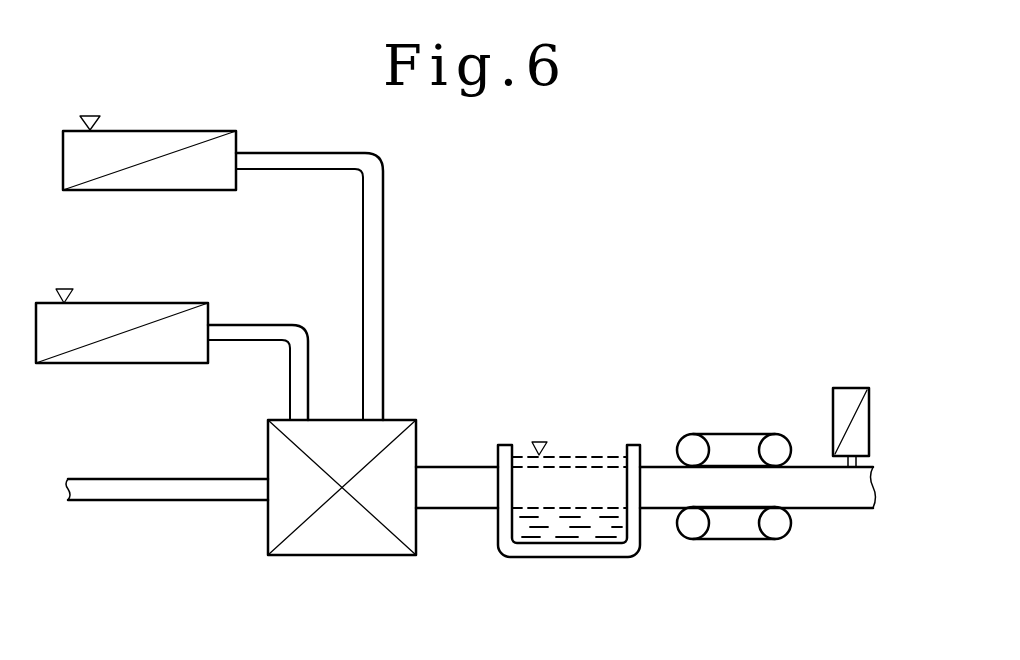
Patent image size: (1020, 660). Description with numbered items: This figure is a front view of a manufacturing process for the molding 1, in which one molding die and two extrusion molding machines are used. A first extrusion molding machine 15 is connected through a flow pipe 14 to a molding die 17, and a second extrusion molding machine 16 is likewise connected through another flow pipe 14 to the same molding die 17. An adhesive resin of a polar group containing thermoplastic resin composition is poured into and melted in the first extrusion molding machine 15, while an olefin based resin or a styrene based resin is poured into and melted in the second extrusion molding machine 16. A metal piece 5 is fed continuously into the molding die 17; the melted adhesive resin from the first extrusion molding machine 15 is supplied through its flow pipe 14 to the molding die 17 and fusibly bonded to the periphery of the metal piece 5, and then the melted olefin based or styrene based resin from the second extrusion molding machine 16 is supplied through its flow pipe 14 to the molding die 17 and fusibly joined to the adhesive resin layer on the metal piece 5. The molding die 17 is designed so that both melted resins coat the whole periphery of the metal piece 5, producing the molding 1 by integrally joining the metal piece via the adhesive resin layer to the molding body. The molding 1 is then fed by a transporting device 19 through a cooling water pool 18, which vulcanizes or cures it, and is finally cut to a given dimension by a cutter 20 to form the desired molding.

The molding 1 is at (463, 463).
The metal piece 5 is at (155, 492).
The flow pipe 14 is at (372, 182).
The first extrusion molding machine 15 is at (143, 315).
The second extrusion molding machine 16 is at (178, 140).
The molding die 17 is at (348, 537).
The cooling water pool 18 is at (573, 550).
The transporting device 19 is at (733, 450).
The cutter 20 is at (845, 400).